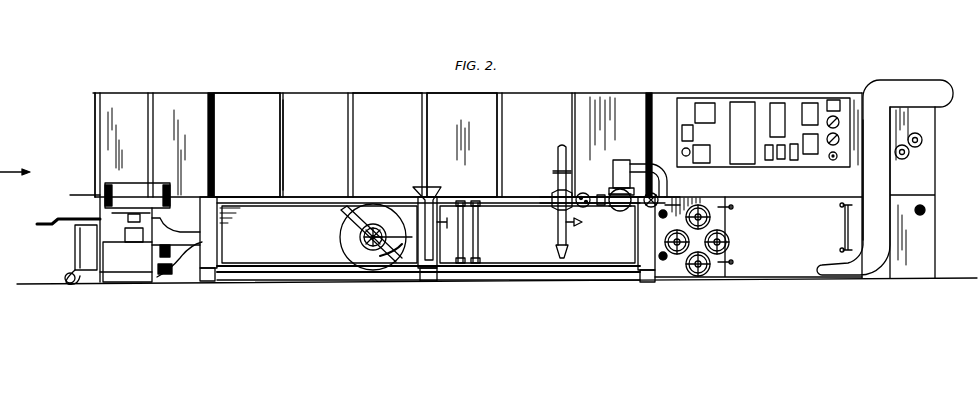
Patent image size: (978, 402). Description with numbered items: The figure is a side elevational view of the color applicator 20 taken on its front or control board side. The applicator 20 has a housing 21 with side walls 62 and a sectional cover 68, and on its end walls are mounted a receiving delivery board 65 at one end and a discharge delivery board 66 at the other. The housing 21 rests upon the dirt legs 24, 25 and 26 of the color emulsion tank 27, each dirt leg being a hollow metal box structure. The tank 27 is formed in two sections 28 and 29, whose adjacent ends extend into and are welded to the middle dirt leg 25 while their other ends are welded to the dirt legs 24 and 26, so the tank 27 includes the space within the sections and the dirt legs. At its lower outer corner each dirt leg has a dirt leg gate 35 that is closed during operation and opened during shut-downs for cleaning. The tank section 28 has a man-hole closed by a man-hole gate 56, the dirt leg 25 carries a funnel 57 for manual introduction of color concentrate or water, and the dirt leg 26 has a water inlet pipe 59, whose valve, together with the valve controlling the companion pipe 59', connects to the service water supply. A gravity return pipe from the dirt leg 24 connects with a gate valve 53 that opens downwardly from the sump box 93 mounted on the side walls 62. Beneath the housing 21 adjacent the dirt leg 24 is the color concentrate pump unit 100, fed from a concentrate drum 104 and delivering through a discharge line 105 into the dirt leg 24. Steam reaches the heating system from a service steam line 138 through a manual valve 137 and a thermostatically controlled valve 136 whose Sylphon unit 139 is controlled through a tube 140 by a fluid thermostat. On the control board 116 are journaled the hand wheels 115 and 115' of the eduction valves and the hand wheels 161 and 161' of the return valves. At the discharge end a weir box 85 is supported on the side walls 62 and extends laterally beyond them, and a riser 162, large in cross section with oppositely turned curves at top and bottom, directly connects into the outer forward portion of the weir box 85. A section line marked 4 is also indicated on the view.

The color applicator 20 is at (699, 68).
The housing 21 is at (319, 107).
The sectional cover 68 is at (388, 93).
The side walls 62 is at (326, 151).
The receiving delivery board 65 is at (96, 126).
The funnel 57 is at (462, 145).
The section line 4 is at (100, 195).
The sump box 93 is at (144, 205).
The concentrate drum 104 is at (74, 246).
The color concentrate pump unit 100 is at (125, 264).
The discharge line 105 is at (176, 248).
The gate valve 53 is at (150, 214).
The dirt leg 24 is at (210, 262).
The dirt leg gate 35 is at (207, 282).
The tank section 28 is at (262, 260).
The color emulsion tank 27 is at (314, 244).
The man-hole gate 56 is at (362, 262).
The dirt leg 25 is at (418, 258).
The water inlet pipe 59 is at (465, 258).
The water inlet pipe 59' is at (491, 254).
The tank section 29 is at (532, 252).
The service steam line 138 is at (557, 180).
The manual valve 137 is at (584, 194).
The thermostatically controlled valve 136 is at (622, 204).
The Sylphon unit 139 is at (616, 165).
The tube 140 is at (668, 176).
The dirt leg 26 is at (640, 244).
The control board 116 is at (726, 220).
The hand wheel 115' is at (716, 201).
The hand wheel 115 is at (708, 276).
The hand wheel 161 is at (673, 265).
The hand wheel 161' is at (739, 242).
The discharge delivery board 66 is at (933, 146).
The weir box 85 is at (922, 80).
The riser 162 is at (880, 183).